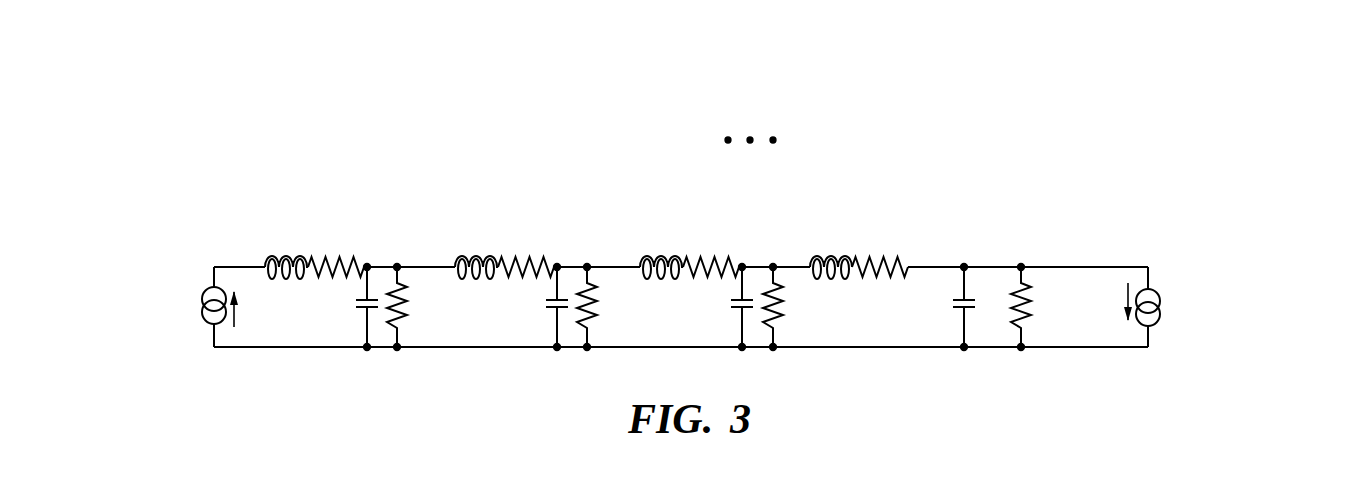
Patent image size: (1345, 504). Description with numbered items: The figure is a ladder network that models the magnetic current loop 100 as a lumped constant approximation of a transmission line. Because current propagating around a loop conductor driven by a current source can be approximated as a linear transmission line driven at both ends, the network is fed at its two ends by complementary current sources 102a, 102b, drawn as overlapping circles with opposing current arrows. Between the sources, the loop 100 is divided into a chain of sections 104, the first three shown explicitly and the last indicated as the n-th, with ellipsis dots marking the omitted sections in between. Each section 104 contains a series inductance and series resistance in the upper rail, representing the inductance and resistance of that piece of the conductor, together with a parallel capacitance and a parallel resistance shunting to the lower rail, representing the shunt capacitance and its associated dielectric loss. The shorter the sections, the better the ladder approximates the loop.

The magnetic current loop 100 is at (577, 137).
The complementary current source 102a is at (1160, 313).
The complementary current source 102b is at (202, 313).
The sections 104 is at (838, 210).